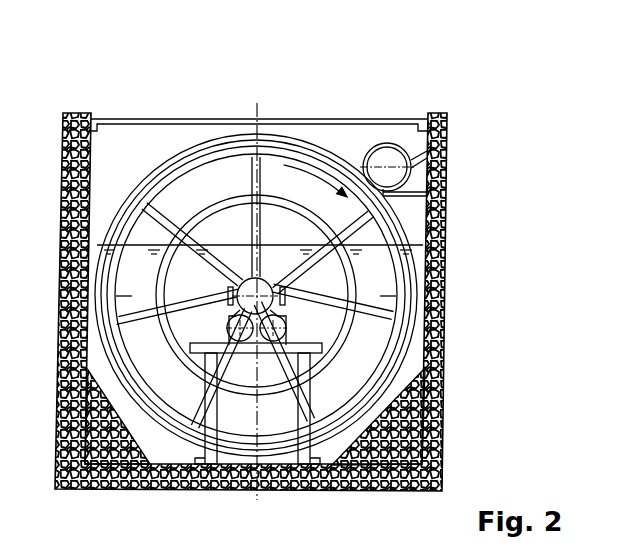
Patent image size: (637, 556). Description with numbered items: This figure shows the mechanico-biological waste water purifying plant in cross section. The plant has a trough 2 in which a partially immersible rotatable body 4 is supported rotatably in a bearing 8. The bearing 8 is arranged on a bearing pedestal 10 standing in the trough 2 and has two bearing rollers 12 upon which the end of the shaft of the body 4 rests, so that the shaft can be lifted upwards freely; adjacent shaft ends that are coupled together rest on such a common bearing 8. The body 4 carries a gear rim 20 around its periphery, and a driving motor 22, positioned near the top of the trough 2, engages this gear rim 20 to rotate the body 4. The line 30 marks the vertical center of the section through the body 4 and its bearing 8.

The trough 2 is at (408, 367).
The rotatable body 4 is at (165, 132).
The bearing 8 is at (230, 449).
The bearing pedestal 10 is at (300, 420).
The bearing roller 12 is at (241, 342).
The gear rim 20 is at (322, 137).
The driving motor 22 is at (387, 195).
The vertical spoke / centerline 30 is at (270, 207).